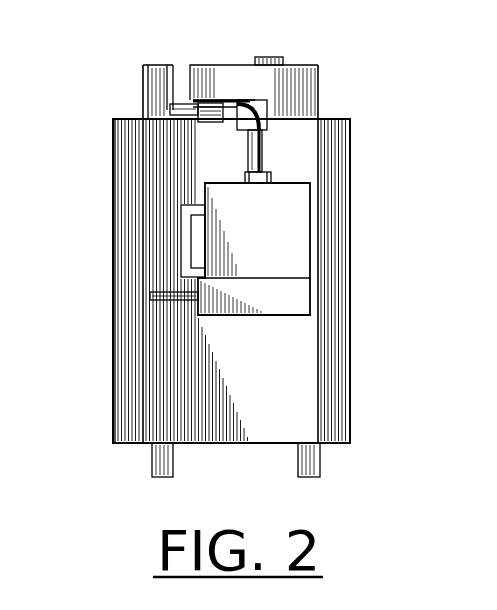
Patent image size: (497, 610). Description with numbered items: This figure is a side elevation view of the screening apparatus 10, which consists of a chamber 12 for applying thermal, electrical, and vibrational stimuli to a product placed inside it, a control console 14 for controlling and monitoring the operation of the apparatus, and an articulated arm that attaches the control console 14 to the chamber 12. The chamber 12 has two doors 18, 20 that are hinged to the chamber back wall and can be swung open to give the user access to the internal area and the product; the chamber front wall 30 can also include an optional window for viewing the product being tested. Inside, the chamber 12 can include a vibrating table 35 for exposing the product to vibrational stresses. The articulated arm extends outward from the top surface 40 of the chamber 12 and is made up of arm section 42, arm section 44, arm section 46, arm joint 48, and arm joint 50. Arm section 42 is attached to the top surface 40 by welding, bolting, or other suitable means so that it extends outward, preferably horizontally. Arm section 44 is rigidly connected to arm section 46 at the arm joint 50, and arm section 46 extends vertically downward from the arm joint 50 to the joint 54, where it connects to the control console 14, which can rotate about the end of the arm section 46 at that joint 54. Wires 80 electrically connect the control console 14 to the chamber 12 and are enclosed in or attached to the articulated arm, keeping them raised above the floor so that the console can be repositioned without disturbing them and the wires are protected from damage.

The screening apparatus 10 is at (330, 67).
The chamber 12 is at (353, 318).
The control console 14 is at (312, 253).
The door 18 is at (113, 383).
The door 20 is at (350, 390).
The chamber front wall 30 is at (248, 443).
The vibrating table 35 is at (163, 290).
The top surface 40 is at (157, 113).
The arm section 42 is at (172, 106).
The arm section 44 is at (234, 102).
The arm section 46 is at (267, 163).
The arm joint 48 is at (225, 107).
The arm joint 50 is at (267, 113).
The joint 54 is at (267, 170).
The wires 80 is at (247, 105).